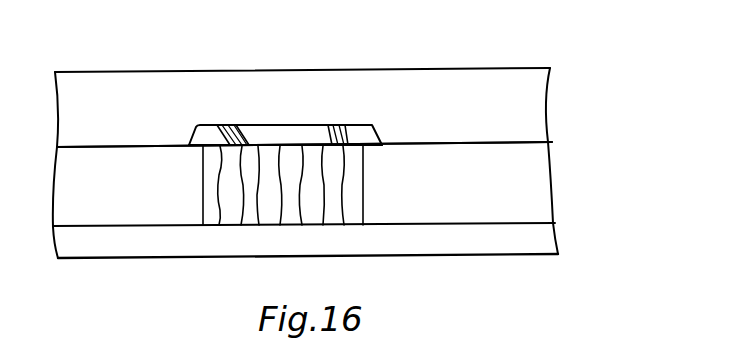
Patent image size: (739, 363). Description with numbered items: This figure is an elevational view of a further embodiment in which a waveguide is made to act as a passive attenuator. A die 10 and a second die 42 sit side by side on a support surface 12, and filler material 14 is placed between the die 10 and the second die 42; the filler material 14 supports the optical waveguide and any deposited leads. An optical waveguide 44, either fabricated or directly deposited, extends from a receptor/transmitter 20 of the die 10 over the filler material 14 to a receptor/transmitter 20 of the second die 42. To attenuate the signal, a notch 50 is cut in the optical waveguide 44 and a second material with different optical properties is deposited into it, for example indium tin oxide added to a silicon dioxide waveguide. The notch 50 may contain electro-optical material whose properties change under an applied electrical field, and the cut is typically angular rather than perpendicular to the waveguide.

The die 10 is at (140, 200).
The support surface 12 is at (548, 240).
The filler material 14 is at (247, 228).
The receptor/transmitter 20 is at (380, 146).
The second die 42 is at (482, 199).
The optical waveguide 44 is at (363, 125).
The notch 50 is at (335, 124).